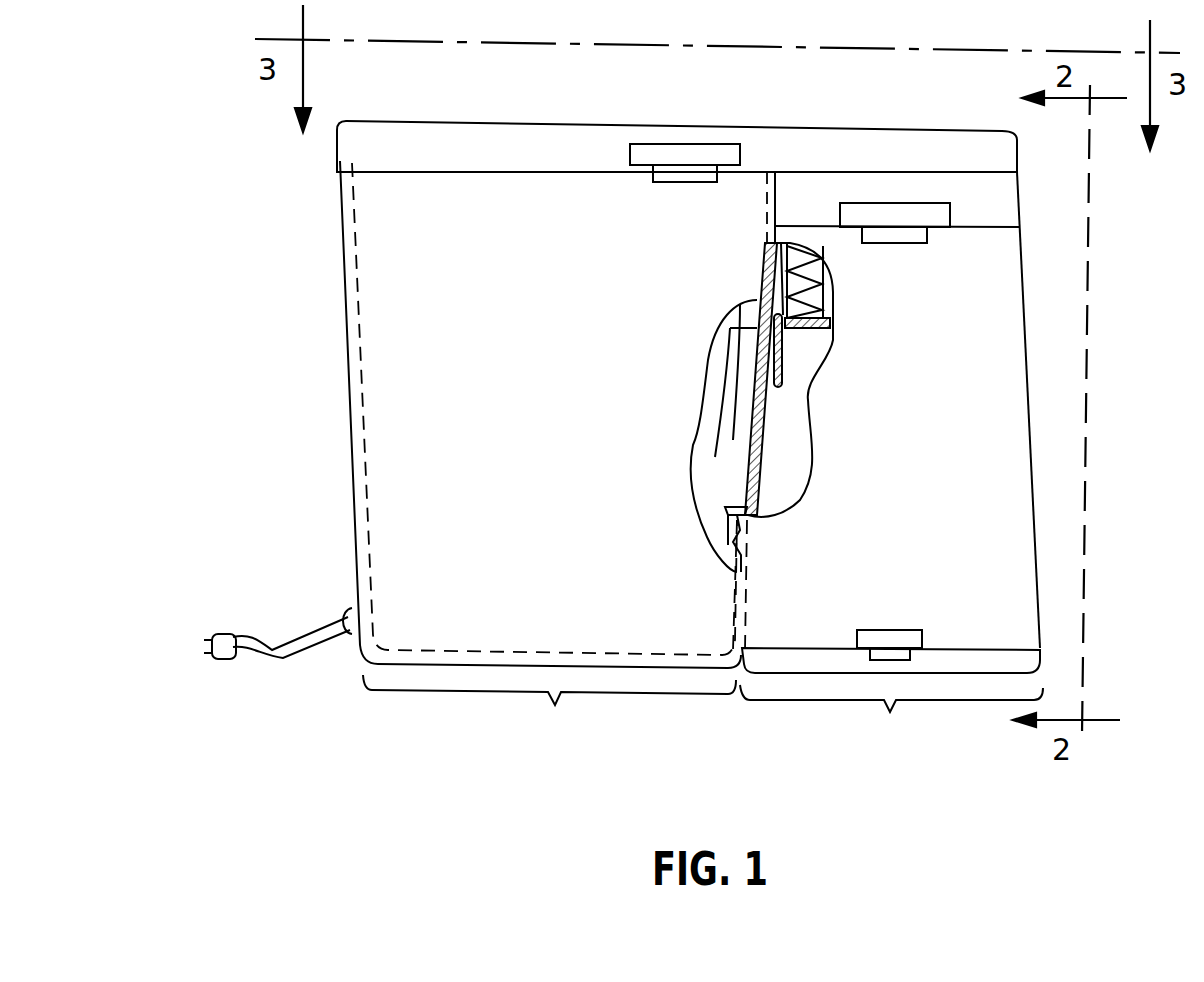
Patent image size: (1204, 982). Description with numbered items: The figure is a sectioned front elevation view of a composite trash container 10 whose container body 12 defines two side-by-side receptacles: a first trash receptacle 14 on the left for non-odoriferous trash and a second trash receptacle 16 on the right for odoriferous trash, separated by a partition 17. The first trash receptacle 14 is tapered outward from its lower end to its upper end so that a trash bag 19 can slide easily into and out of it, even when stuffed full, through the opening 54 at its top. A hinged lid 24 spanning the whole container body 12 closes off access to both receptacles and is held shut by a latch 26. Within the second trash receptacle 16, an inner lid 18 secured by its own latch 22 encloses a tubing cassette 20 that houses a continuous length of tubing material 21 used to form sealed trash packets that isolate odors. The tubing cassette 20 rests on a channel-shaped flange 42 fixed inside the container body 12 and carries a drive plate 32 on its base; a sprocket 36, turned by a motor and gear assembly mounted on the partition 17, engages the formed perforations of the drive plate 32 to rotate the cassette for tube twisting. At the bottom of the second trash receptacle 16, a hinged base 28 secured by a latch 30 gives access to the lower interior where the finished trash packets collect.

The composite trash container 10 is at (292, 252).
The container body 12 is at (352, 483).
The first trash receptacle 14 is at (546, 456).
The second trash receptacle 16 is at (891, 464).
The partition 17 is at (757, 462).
The inner lid 18 is at (1010, 218).
The trash bag 19 is at (703, 490).
The tubing cassette 20 is at (830, 290).
The tubing material 21 is at (767, 263).
The latch 22 is at (870, 215).
The hinged lid 24 is at (415, 135).
The latch 26 is at (688, 153).
The hinged base 28 is at (967, 663).
The latch 30 is at (885, 640).
The drive plate 32 is at (838, 312).
The sprocket 36 is at (782, 377).
The channel-shaped flange 42 is at (822, 333).
The opening 54 is at (737, 433).